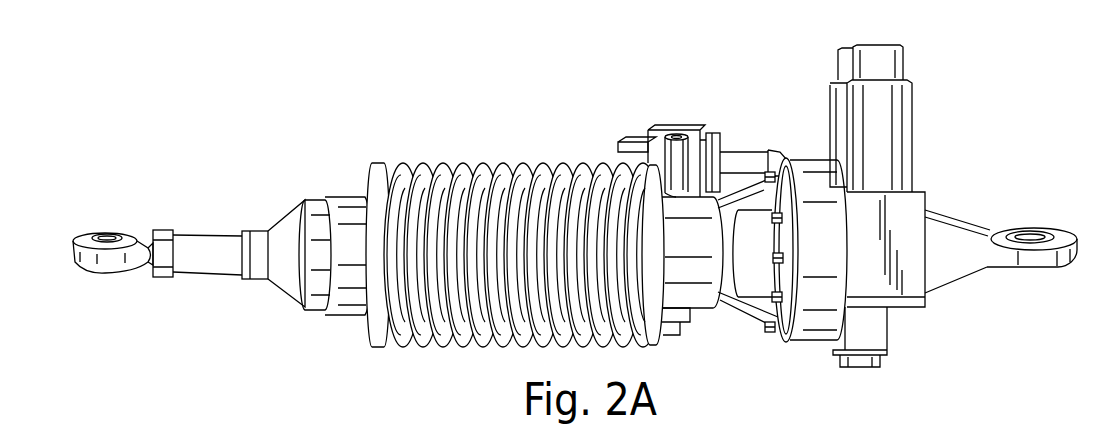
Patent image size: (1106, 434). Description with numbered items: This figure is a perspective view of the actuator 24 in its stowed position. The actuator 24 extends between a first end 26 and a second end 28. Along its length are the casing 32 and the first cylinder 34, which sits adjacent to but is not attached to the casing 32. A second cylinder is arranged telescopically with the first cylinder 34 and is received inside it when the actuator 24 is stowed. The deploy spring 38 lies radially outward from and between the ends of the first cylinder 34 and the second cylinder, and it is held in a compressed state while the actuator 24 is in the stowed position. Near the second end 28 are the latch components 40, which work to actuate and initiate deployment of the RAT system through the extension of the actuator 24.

The actuator 24 is at (601, 110).
The first end 26 is at (184, 220).
The second end 28 is at (1015, 200).
The casing 32 is at (786, 148).
The first cylinder 34 is at (703, 292).
The deploy spring 38 is at (433, 162).
The latch components 40 is at (930, 178).